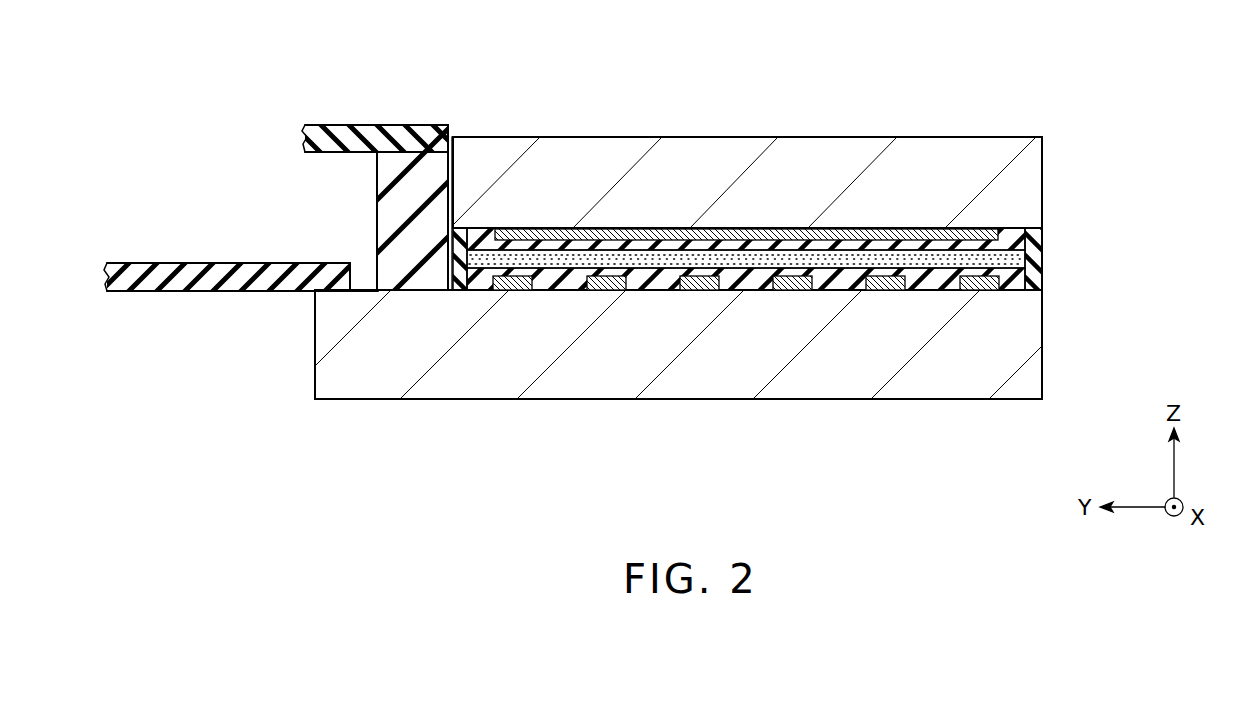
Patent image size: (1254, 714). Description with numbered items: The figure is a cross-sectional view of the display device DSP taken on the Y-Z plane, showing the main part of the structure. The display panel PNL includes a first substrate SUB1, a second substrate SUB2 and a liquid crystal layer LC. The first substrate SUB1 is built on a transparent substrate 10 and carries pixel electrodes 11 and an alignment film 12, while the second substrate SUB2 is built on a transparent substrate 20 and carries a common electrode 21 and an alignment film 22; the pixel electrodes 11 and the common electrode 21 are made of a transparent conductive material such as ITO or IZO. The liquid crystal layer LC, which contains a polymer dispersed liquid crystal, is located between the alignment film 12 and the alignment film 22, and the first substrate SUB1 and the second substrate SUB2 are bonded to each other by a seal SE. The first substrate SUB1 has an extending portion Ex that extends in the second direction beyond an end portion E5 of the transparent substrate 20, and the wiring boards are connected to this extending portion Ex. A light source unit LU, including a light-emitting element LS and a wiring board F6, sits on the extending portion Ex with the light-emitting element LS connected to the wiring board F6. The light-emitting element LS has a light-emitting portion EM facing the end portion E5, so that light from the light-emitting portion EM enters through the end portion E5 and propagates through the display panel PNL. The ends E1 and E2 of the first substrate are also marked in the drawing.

The transparent substrate 10 is at (652, 399).
The pixel electrodes 11 is at (512, 290).
The alignment film 12 is at (556, 280).
The transparent substrate 20 is at (725, 139).
The common electrode 21 is at (852, 242).
The alignment film 22 is at (906, 236).
The first substrate SUB1 is at (1043, 336).
The second substrate SUB2 is at (1043, 188).
The liquid crystal layer LC is at (1022, 256).
The seal SE is at (1040, 282).
The display panel PNL is at (1043, 136).
The display device DSP is at (1128, 138).
The first end of first substrate E1 is at (1043, 372).
The second end of first substrate E2 is at (315, 365).
The end portion E5 is at (447, 184).
The light-emitting portion EM is at (453, 206).
The light-emitting element LS is at (382, 181).
The light source unit LU is at (393, 122).
The wiring board F6 is at (342, 125).
The extending portion Ex is at (363, 290).